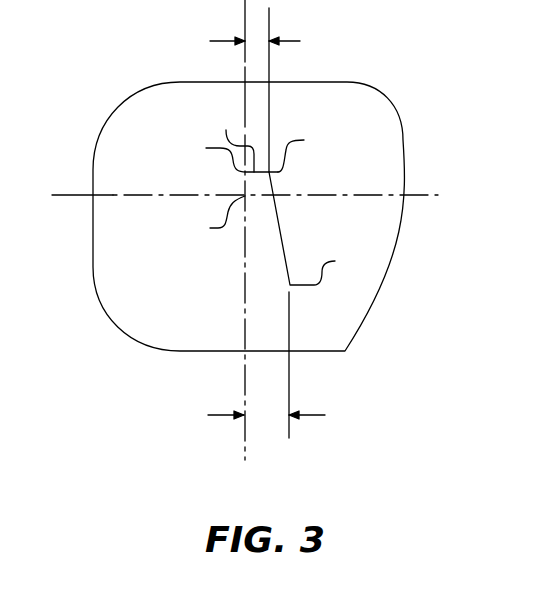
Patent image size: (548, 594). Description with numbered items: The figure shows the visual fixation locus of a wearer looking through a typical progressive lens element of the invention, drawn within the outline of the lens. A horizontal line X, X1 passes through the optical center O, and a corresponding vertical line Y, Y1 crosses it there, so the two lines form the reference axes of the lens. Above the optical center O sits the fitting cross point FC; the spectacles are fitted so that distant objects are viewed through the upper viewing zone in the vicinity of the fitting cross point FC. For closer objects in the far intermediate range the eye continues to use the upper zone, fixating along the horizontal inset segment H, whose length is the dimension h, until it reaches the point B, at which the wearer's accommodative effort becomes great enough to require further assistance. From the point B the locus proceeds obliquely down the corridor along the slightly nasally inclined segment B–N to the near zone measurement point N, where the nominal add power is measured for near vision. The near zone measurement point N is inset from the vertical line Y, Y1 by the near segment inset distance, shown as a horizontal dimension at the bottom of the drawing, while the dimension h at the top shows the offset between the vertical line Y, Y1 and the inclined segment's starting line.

The horizontal line X is at (232, 311).
The horizontal line X1 is at (458, 194).
The vertical line Y is at (227, 230).
The vertical line Y1 is at (247, 479).
The length of horizontal inset segment h is at (292, 90).
The fitting cross point FC is at (224, 155).
The horizontal inset segment H is at (236, 137).
The point B is at (299, 151).
The near zone measurement point N is at (310, 228).
The optical center O is at (218, 219).